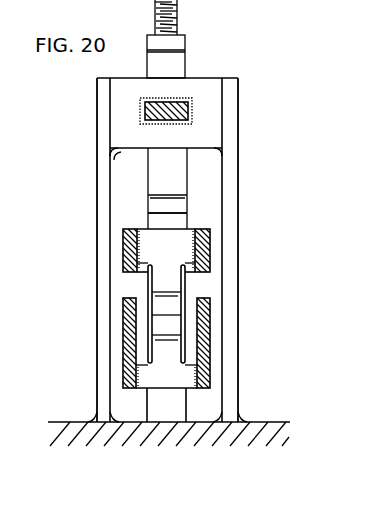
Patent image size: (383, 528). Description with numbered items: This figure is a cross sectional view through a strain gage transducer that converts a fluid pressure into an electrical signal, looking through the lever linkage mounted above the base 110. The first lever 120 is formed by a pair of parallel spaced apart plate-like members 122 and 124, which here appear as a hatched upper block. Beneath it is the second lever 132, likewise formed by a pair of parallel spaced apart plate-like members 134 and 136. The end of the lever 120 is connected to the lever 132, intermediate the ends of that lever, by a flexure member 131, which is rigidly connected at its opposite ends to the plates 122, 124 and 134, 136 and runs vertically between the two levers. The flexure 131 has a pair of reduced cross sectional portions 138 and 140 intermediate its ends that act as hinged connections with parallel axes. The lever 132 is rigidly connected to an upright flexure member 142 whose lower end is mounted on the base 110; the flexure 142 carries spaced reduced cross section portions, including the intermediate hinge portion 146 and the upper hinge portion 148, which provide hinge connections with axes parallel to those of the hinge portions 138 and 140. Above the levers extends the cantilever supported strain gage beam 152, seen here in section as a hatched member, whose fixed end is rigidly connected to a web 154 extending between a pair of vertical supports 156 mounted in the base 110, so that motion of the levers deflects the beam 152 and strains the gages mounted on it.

The base 110 is at (272, 422).
The lever 120 is at (200, 222).
The plate-like member 122 is at (208, 257).
The plate-like member 124 is at (124, 251).
The flexure member 131 is at (152, 238).
The second lever 132 is at (216, 367).
The plate-like member 134 is at (208, 318).
The plate-like member 136 is at (124, 319).
The reduced cross sectional portion 138 is at (170, 300).
The reduced cross sectional portion 140 is at (168, 348).
The upright flexure member 142 is at (185, 43).
The intermediate hinge portion 146 is at (152, 202).
The reduced cross section portion 148 is at (177, 62).
The strain gage beam 152 is at (140, 109).
The web 154 is at (207, 85).
The vertical supports 156 is at (98, 165).